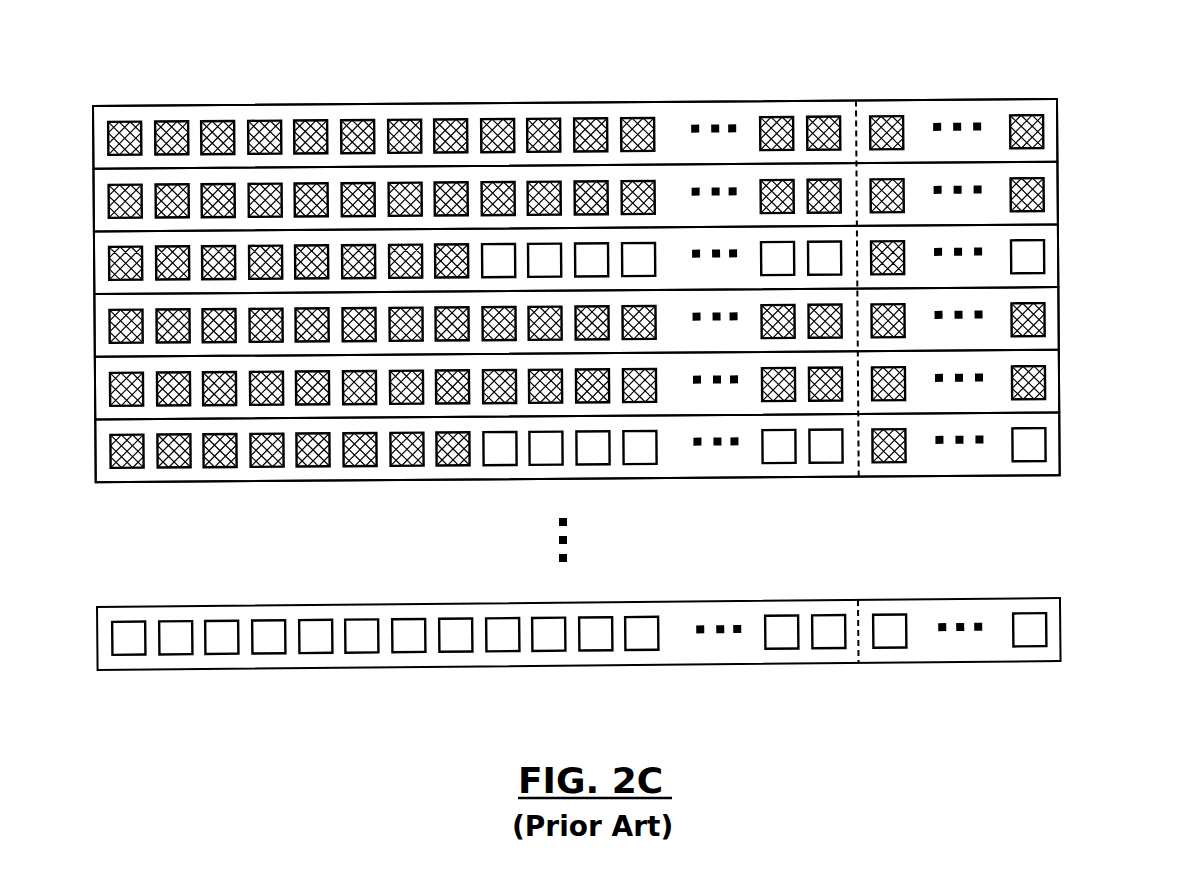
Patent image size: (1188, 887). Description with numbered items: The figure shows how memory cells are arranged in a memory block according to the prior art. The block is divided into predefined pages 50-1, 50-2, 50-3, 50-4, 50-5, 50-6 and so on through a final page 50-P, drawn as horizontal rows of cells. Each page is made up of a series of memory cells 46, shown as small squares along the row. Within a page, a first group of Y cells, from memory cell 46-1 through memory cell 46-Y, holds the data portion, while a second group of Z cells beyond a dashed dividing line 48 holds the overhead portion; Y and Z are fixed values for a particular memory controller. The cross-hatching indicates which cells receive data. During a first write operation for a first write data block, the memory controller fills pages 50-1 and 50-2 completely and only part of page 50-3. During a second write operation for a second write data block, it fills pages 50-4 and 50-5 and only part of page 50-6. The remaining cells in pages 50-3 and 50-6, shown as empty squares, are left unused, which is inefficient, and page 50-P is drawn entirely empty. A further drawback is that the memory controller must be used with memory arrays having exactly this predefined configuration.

The memory cell 46-1 is at (119, 123).
The memory cells 46 is at (487, 124).
The memory array 48 is at (613, 106).
The memory cell 46-Y is at (809, 123).
The page 50-1 is at (1057, 137).
The page 50-2 is at (1057, 200).
The page 50-3 is at (1057, 262).
The page 50-4 is at (1057, 325).
The page 50-5 is at (1057, 388).
The page 50-6 is at (1057, 451).
The page 50-P is at (1060, 631).